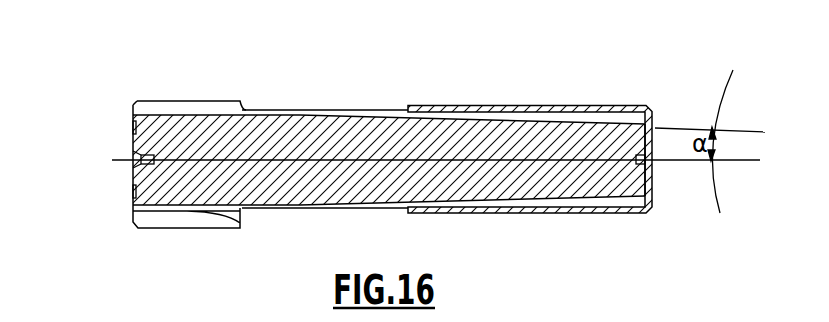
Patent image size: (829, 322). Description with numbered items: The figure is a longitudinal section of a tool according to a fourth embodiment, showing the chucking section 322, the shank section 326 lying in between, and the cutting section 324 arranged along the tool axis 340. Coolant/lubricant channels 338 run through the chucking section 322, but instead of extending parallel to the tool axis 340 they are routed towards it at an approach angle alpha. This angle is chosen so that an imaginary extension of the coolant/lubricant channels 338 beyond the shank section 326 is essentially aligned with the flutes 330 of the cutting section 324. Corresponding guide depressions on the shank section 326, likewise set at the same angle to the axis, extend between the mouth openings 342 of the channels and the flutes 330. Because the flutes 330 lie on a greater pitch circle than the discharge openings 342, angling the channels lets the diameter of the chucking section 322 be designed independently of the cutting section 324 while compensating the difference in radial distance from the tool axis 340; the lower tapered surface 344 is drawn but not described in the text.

The chucking section 322 is at (532, 99).
The cutting section 324 is at (188, 97).
The shank section 326 is at (315, 109).
The flutes 330 is at (152, 110).
The coolant/lubricant channels 338 is at (617, 121).
The tool axis 340 is at (121, 160).
The mouth openings 342 is at (408, 115).
The lower tapered surface 344 is at (355, 205).